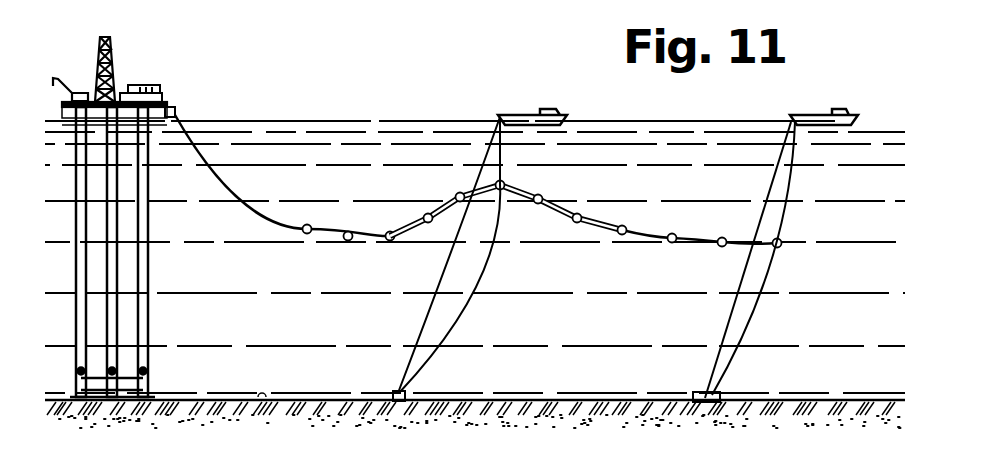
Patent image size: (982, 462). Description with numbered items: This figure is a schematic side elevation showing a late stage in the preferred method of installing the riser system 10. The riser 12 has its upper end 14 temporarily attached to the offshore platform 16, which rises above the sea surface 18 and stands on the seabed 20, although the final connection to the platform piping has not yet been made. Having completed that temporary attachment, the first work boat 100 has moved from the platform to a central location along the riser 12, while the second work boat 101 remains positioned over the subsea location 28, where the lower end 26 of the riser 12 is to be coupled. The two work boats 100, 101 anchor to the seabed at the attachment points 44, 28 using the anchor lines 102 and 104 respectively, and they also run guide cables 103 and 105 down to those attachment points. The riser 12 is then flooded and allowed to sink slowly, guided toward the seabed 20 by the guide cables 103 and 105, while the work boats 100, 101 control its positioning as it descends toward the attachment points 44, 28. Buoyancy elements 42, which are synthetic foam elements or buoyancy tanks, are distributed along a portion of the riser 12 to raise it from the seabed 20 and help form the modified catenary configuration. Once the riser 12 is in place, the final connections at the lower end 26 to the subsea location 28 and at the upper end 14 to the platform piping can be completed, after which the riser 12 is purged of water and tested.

The riser system 10 is at (400, 246).
The riser 12 is at (293, 225).
The upper end 14 is at (178, 110).
The offshore platform 16 is at (158, 88).
The sea surface 18 is at (372, 118).
The seabed 20 is at (252, 400).
The lower end 26 is at (782, 241).
The subsea location 28 is at (706, 397).
The buoyancy elements 42 is at (562, 212).
The attachment point 44 is at (399, 402).
The first work boat 100 is at (545, 110).
The second work boat 101 is at (828, 112).
The anchor line 102 is at (412, 348).
The guide cable 103 is at (460, 327).
The anchor line 104 is at (730, 306).
The guide cable 105 is at (755, 325).